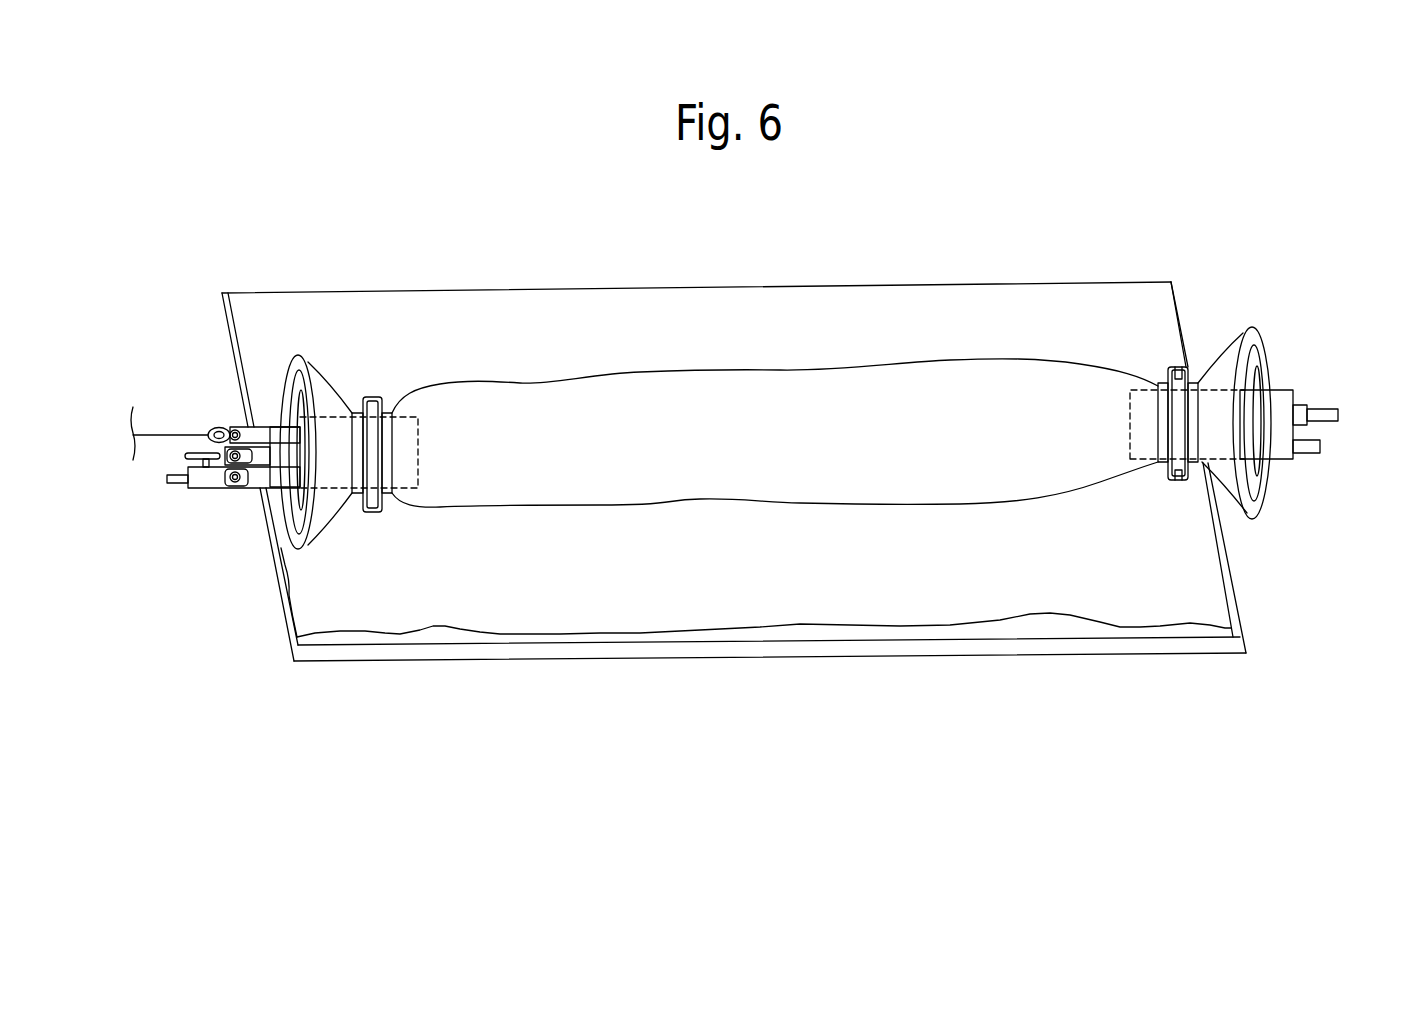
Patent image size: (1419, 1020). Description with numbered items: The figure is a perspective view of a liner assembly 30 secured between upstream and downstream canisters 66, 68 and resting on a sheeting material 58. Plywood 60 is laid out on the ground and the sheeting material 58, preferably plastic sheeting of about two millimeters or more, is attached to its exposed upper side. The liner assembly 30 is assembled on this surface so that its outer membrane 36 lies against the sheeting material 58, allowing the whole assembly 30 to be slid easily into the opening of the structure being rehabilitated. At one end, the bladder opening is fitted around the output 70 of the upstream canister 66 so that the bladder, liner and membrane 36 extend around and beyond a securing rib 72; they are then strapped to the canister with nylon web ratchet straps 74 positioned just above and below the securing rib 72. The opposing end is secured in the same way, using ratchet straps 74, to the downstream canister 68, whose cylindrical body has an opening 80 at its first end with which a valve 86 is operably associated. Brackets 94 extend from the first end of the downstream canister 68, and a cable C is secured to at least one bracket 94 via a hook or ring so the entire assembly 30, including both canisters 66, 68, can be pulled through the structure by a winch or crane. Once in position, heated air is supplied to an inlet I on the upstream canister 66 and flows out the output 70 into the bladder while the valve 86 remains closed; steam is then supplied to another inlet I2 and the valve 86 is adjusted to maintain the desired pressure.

The liner assembly 30 is at (826, 312).
The membrane 36 is at (645, 383).
The sheeting material 58 is at (1203, 576).
The plywood 60 is at (938, 651).
The upstream canister 66 is at (1299, 407).
The downstream canister 68 is at (254, 438).
The output 70 is at (1118, 418).
The securing rib 72 is at (1178, 375).
The ratchet straps 74 is at (360, 412).
The opening 80 is at (150, 479).
The valve 86 is at (192, 434).
The brackets 94 is at (242, 425).
The cable C is at (156, 422).
The inlet I is at (1362, 410).
The inlet I2 is at (1338, 448).